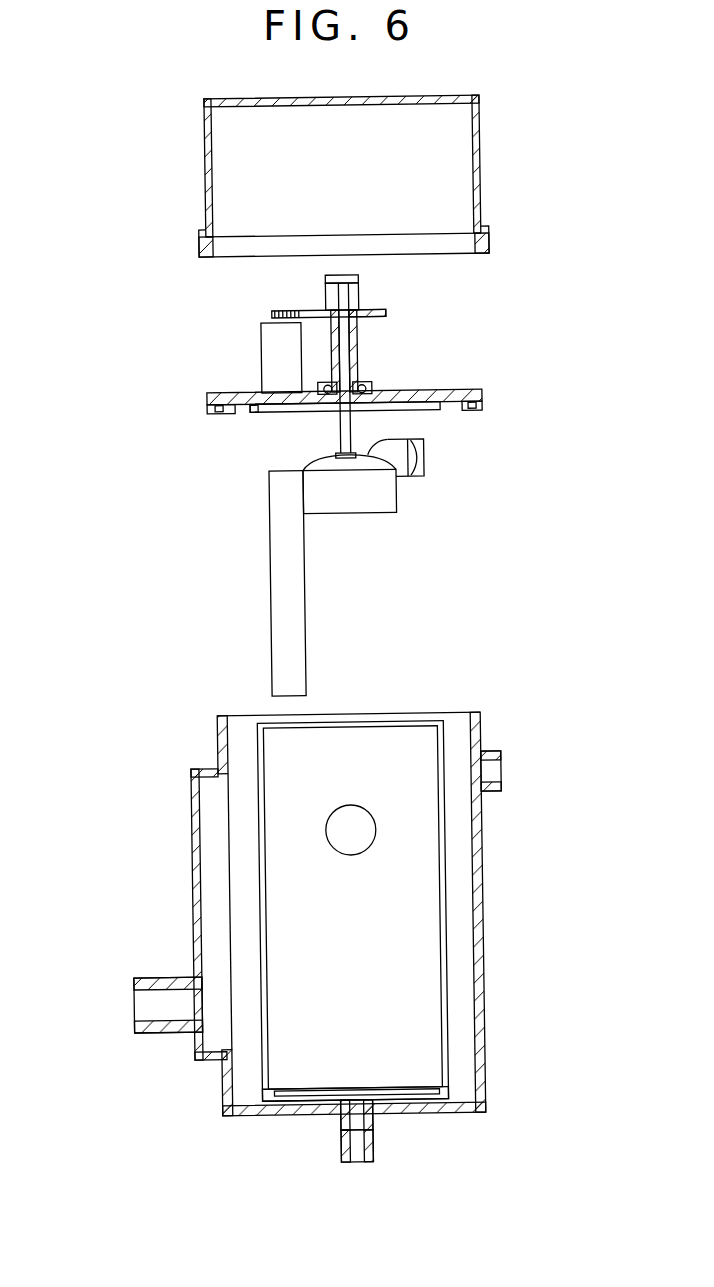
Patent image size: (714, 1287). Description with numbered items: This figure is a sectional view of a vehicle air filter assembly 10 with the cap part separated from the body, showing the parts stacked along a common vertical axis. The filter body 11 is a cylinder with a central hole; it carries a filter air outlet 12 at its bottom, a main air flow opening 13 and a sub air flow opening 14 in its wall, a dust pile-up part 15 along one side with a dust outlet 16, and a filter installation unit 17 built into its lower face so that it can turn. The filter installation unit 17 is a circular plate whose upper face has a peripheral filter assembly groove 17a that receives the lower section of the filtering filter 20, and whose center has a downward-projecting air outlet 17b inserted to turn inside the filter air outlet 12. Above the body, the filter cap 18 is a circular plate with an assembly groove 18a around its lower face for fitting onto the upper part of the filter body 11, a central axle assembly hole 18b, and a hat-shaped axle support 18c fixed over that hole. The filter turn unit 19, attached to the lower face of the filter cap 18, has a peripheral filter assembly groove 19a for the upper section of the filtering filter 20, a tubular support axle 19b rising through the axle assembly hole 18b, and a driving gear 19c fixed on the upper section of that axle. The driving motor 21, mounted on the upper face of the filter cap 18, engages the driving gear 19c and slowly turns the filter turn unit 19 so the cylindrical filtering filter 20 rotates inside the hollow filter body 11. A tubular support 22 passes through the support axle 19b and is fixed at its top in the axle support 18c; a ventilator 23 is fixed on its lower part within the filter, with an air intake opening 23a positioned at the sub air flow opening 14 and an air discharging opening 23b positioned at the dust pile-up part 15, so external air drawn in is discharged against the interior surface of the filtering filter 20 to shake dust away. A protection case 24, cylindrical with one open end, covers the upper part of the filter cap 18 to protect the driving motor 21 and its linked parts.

The air filter assembly 10 is at (147, 103).
The filter body 11 is at (482, 885).
The filter air outlet 12 is at (372, 1138).
The main air flow opening 13 is at (372, 835).
The sub air flow opening 14 is at (487, 771).
The dust pile-up part 15 is at (195, 833).
The dust outlet 16 is at (140, 975).
The filter installation unit 17 is at (265, 1085).
The filter assembly groove 17a is at (447, 1088).
The air outlet 17b is at (340, 1137).
The filter cap 18 is at (447, 390).
The assembly groove 18a is at (475, 405).
The axle assembly hole 18b is at (362, 388).
The axle support 18c is at (360, 292).
The filter turn unit 19 is at (273, 413).
The filter assembly groove 19a is at (253, 413).
The support axle 19b is at (320, 385).
The driving gear 19c is at (273, 313).
The filtering filter 20 is at (443, 942).
The driving motor 21 is at (265, 345).
The support 22 is at (327, 285).
The ventilator 23 is at (385, 497).
The air intake opening 23a is at (423, 460).
The air discharging opening 23b is at (295, 657).
The protection case 24 is at (205, 183).